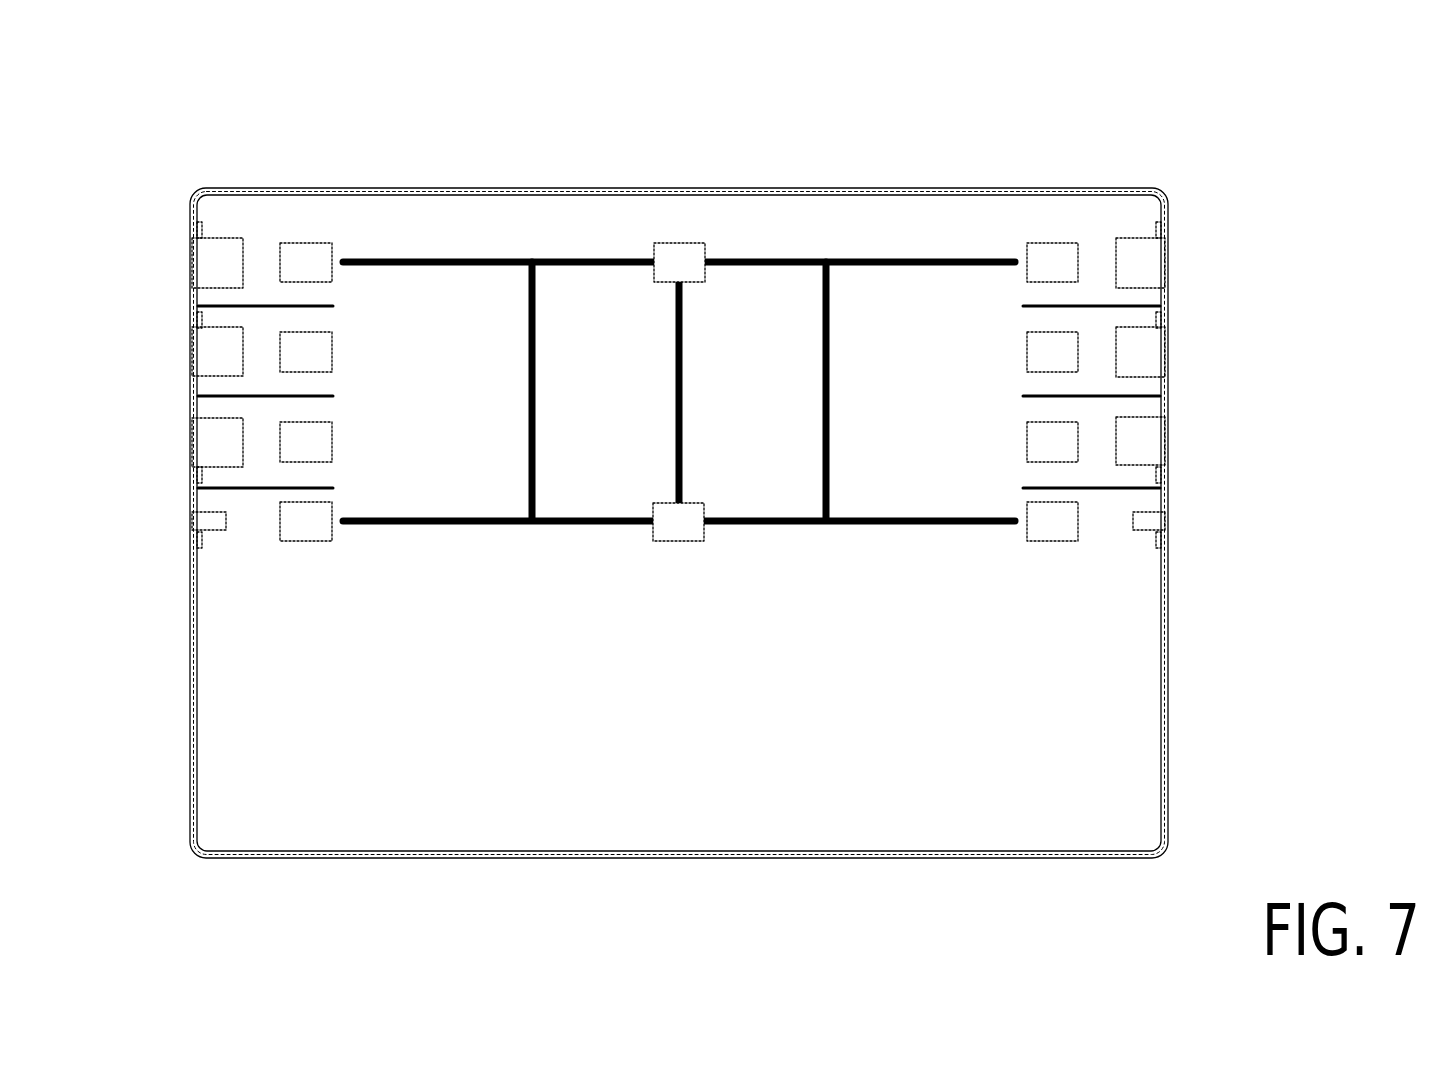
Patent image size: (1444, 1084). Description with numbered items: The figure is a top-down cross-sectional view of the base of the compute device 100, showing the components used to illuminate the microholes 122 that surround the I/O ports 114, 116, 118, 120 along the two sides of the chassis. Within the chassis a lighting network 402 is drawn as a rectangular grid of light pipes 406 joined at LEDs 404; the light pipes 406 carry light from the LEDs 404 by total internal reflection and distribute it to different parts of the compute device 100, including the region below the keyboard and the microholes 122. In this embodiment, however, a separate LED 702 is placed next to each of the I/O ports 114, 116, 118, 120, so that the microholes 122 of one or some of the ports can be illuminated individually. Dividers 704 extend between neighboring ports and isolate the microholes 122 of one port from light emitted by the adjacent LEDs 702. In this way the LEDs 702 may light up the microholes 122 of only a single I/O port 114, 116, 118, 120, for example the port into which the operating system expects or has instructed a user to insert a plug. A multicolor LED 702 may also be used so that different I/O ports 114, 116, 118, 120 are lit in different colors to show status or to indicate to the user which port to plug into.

The compute device 100 is at (124, 95).
The I/O port 114 is at (190, 261).
The I/O port 116 is at (190, 352).
The I/O port 118 is at (190, 447).
The I/O port 120 is at (190, 511).
The microholes 122 is at (190, 229).
The lighting network 402 is at (679, 416).
The LEDs 404 is at (679, 392).
The light pipes 406 is at (608, 258).
The LED 702 is at (679, 392).
The dividers 704 is at (334, 306).